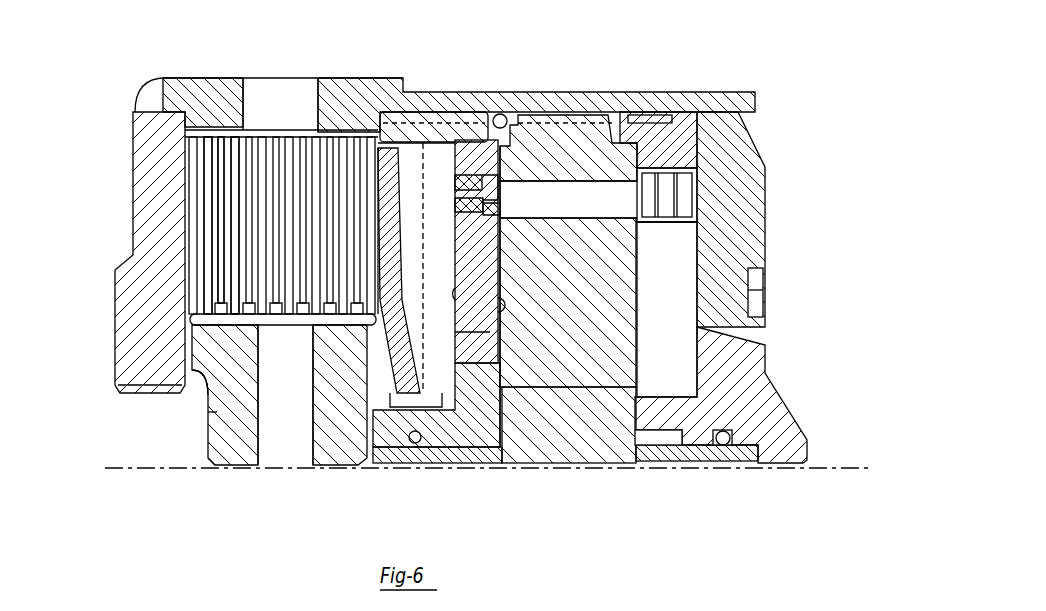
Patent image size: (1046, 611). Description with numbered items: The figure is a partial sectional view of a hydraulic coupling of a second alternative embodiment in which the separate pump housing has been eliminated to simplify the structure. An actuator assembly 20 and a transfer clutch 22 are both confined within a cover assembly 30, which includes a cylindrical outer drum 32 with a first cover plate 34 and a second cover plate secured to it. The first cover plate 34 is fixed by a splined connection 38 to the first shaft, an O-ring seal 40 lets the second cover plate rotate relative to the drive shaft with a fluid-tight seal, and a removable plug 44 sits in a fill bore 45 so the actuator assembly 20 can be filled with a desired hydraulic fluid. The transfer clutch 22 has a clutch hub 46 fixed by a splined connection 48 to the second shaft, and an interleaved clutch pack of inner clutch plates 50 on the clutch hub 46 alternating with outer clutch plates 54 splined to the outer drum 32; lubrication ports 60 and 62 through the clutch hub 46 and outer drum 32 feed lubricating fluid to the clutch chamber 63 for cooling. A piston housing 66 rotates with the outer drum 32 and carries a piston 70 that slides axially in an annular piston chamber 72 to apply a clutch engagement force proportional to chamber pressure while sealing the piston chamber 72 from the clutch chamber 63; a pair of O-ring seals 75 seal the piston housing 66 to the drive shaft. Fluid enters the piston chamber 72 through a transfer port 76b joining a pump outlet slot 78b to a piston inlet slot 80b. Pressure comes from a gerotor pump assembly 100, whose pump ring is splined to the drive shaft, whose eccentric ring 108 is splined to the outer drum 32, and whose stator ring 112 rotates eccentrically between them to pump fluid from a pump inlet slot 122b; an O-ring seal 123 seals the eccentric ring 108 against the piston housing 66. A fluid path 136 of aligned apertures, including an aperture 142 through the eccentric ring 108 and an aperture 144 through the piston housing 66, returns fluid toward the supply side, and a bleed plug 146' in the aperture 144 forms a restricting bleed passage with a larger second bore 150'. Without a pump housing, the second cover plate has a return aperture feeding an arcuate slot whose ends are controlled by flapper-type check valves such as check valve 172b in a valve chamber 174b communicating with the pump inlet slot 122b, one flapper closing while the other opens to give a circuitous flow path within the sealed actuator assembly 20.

The cover assembly 30 is at (222, 78).
The lubrication port 62 is at (262, 78).
The transfer clutch 22 is at (290, 195).
The piston chamber 72 is at (442, 140).
The O-ring seal 123 is at (503, 112).
The outer drum 32 is at (550, 100).
The actuator assembly 20 is at (570, 127).
The eccentric ring 108 is at (632, 113).
The fluid path 136 is at (700, 170).
The first cover plate 34 is at (138, 182).
The outer clutch plates 54 is at (210, 228).
The second bore 150' is at (439, 266).
The aperture 144 is at (484, 212).
The aperture 142 is at (542, 195).
The flapper-type check valve 172b is at (620, 198).
The bleed plug 146' is at (451, 215).
The valve chamber 174b is at (683, 230).
The clutch chamber 63 is at (233, 273).
The piston inlet slot 80b is at (460, 297).
The removable plug 44 is at (749, 264).
The inner clutch plates 50 is at (213, 295).
The fill bore 45 is at (760, 303).
The pump outlet slot 78b is at (495, 310).
The transfer port 76b is at (490, 332).
The pump inlet slot 122b is at (672, 338).
The piston 70 is at (387, 295).
The splined connection 38 is at (143, 388).
The O-ring seals 75 is at (313, 432).
The clutch hub 46 is at (213, 413).
The splined connection 48 is at (232, 470).
The lubrication port 60 is at (292, 455).
The piston housing 66 is at (467, 470).
The stator ring 112 is at (573, 368).
The gerotor pump assembly 100 is at (612, 420).
The O-ring seal 40 is at (718, 446).